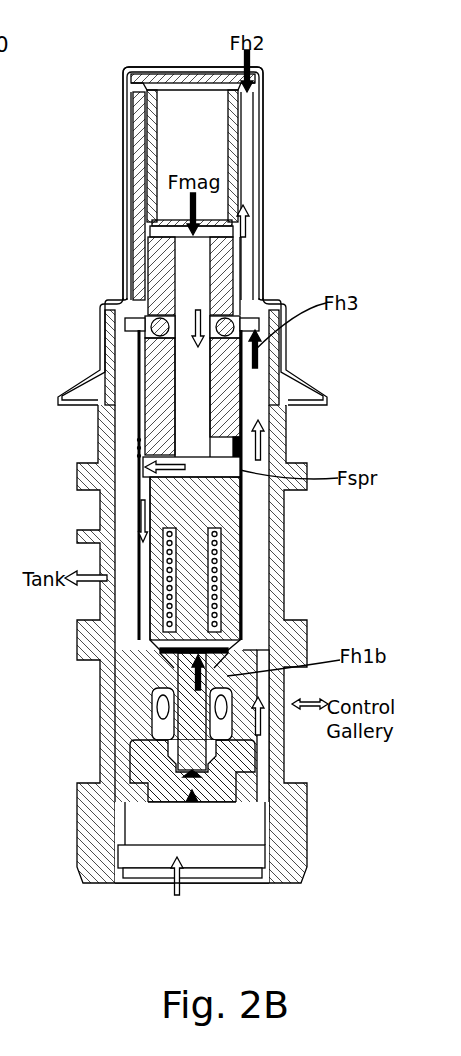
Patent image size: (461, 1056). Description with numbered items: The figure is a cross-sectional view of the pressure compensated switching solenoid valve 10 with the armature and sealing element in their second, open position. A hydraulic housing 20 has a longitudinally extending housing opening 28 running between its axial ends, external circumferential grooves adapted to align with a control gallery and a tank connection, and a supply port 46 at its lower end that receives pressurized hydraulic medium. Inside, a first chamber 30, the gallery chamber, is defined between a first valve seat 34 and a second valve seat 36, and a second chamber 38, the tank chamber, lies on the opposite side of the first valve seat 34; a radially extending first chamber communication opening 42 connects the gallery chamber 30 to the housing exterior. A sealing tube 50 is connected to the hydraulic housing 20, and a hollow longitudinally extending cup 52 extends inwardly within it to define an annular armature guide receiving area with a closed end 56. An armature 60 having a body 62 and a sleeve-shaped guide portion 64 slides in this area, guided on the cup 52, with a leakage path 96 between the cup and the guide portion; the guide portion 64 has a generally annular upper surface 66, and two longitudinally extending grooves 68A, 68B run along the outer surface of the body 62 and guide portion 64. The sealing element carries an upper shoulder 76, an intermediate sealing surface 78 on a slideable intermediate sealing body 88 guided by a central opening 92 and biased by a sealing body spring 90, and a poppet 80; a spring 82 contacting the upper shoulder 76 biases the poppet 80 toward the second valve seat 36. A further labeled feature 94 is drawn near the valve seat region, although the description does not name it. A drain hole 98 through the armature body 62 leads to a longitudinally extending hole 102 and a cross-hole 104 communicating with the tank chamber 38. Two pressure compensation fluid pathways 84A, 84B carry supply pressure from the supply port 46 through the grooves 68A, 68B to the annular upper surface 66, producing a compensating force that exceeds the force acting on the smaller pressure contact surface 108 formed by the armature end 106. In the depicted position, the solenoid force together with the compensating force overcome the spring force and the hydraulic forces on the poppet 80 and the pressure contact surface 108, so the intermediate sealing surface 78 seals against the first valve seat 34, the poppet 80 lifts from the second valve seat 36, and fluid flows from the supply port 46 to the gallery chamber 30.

The pressure compensated switching solenoid valve 10 is at (333, 86).
The hydraulic housing 20 is at (315, 840).
The housing opening 28 is at (143, 827).
The first chamber 30 is at (157, 712).
The first valve seat 34 is at (148, 652).
The second valve seat 36 is at (207, 737).
The second chamber 38 is at (147, 578).
The first chamber communication opening 42 is at (147, 748).
The supply port 46 is at (245, 885).
The sealing tube 50 is at (263, 285).
The hollow longitudinally extending cup 52 is at (157, 165).
The closed end 56 is at (250, 90).
The armature 60 is at (145, 284).
The body 62 is at (155, 262).
The sleeve-shaped guide portion 64 is at (145, 122).
The generally annular upper surface 66 is at (262, 98).
The longitudinally extending groove 68A is at (248, 158).
The longitudinally extending groove 68B is at (140, 194).
The upper shoulder 76 is at (253, 413).
The intermediate sealing surface 78 is at (240, 647).
The poppet 80 is at (252, 772).
The spring 82 is at (140, 617).
The pressure compensation fluid pathway 84A is at (257, 520).
The pressure compensation fluid pathway 84B is at (125, 443).
The intermediate sealing body 88 is at (227, 565).
The sealing body spring 90 is at (235, 545).
The central opening 92 is at (220, 625).
The check ball 94 is at (168, 690).
The leakage path 96 is at (228, 108).
The drain hole 98 is at (212, 262).
The longitudinally extending hole 102 is at (248, 397).
The cross-hole 104 is at (190, 470).
The end 106 is at (130, 331).
The pressure contact surface 108 is at (128, 324).